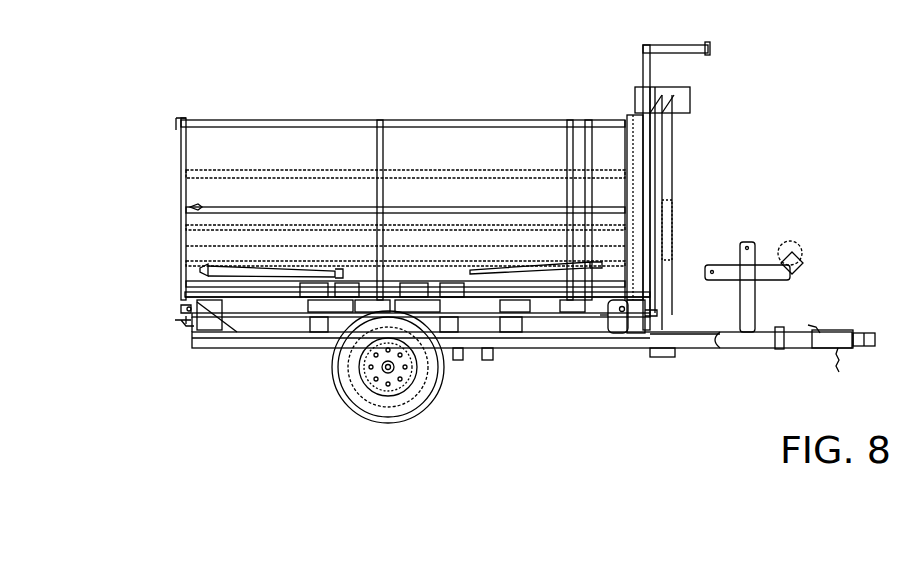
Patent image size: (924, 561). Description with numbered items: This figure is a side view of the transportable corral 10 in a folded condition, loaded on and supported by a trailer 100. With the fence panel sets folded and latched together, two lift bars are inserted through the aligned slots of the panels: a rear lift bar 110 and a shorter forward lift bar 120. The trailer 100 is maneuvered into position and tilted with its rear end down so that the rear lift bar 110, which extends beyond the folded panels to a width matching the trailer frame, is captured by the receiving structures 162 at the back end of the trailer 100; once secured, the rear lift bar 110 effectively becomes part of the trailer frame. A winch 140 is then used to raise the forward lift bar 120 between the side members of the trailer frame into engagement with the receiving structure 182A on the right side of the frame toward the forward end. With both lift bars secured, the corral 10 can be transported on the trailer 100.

The corral 10 is at (345, 118).
The trailer 100 is at (542, 362).
The rear lift bar 110 is at (180, 308).
The forward lift bar 120 is at (620, 312).
The winch 140 is at (754, 225).
The receiving structures 162 is at (190, 324).
The receiving structure 182A is at (632, 315).